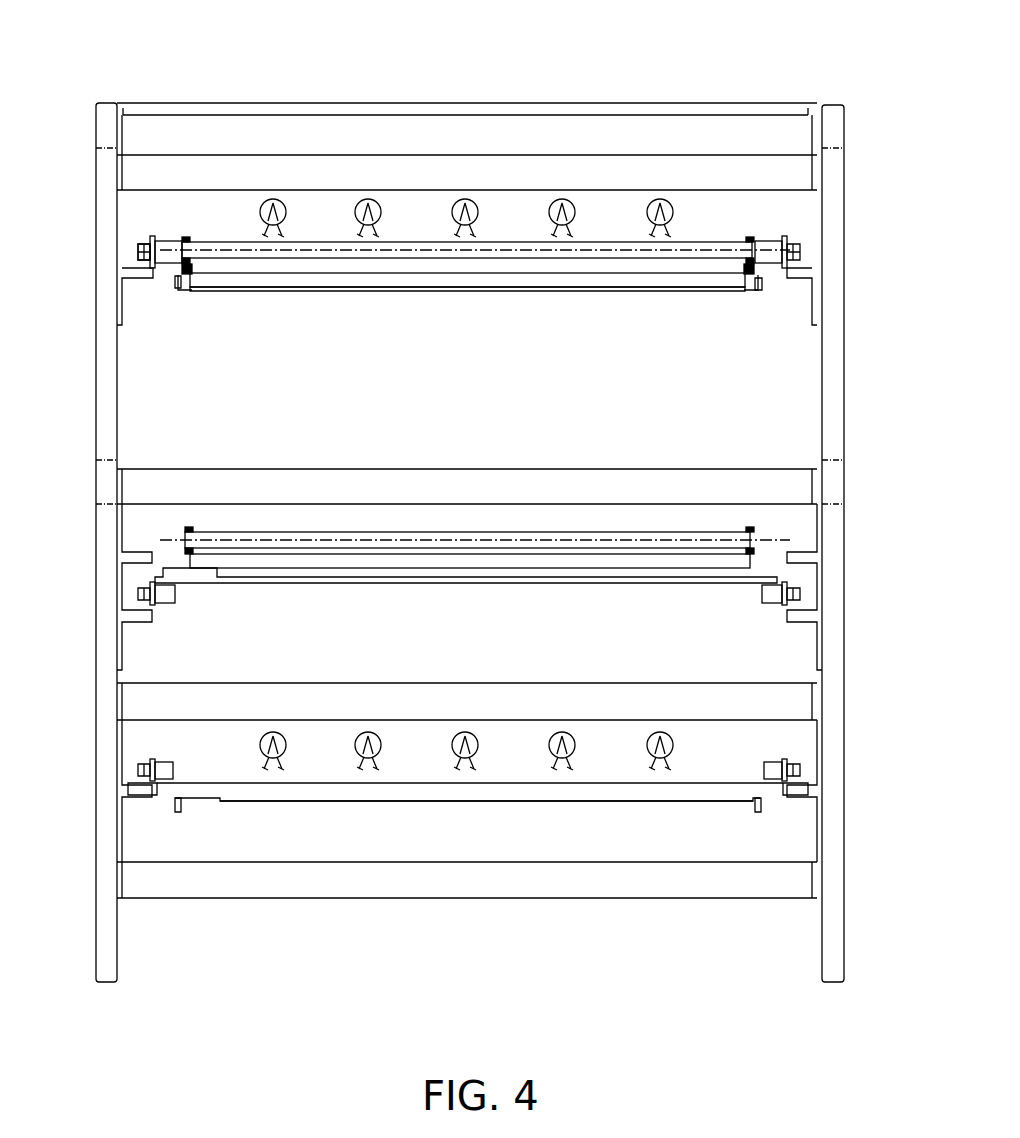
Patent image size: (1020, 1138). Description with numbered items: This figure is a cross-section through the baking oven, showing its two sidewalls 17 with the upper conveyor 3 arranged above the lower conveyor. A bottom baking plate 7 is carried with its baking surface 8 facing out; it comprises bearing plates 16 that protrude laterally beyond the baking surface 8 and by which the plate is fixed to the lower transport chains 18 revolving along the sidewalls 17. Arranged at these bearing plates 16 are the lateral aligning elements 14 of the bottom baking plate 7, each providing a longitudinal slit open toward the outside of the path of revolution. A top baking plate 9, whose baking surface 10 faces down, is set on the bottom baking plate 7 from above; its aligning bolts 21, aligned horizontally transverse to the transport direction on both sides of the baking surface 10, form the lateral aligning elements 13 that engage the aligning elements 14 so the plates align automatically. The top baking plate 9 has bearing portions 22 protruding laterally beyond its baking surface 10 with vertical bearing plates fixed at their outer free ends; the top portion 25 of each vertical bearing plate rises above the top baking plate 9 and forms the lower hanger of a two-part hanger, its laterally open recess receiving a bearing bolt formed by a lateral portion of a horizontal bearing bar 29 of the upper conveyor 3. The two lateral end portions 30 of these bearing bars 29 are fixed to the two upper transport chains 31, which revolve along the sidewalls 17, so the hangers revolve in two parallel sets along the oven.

The upper conveyor 3 is at (515, 200).
The bottom baking plate 7 is at (425, 578).
The baking surface 8 is at (405, 801).
The top baking plate 9 is at (552, 279).
The baking surface 10 is at (412, 291).
The lateral aligning element 13 is at (756, 284).
The lateral aligning element 14 is at (175, 810).
The bearing plate 16 is at (205, 783).
The sidewall 17 is at (103, 343).
The lower transport chain 18 is at (172, 602).
The aligning bolt 21 is at (175, 283).
The bearing portion 22 is at (202, 284).
The top portion of vertical bearing plate 25 is at (187, 242).
The horizontal bearing bar 29 is at (700, 247).
The lateral end portion 30 is at (172, 225).
The upper transport chain 31 is at (143, 243).